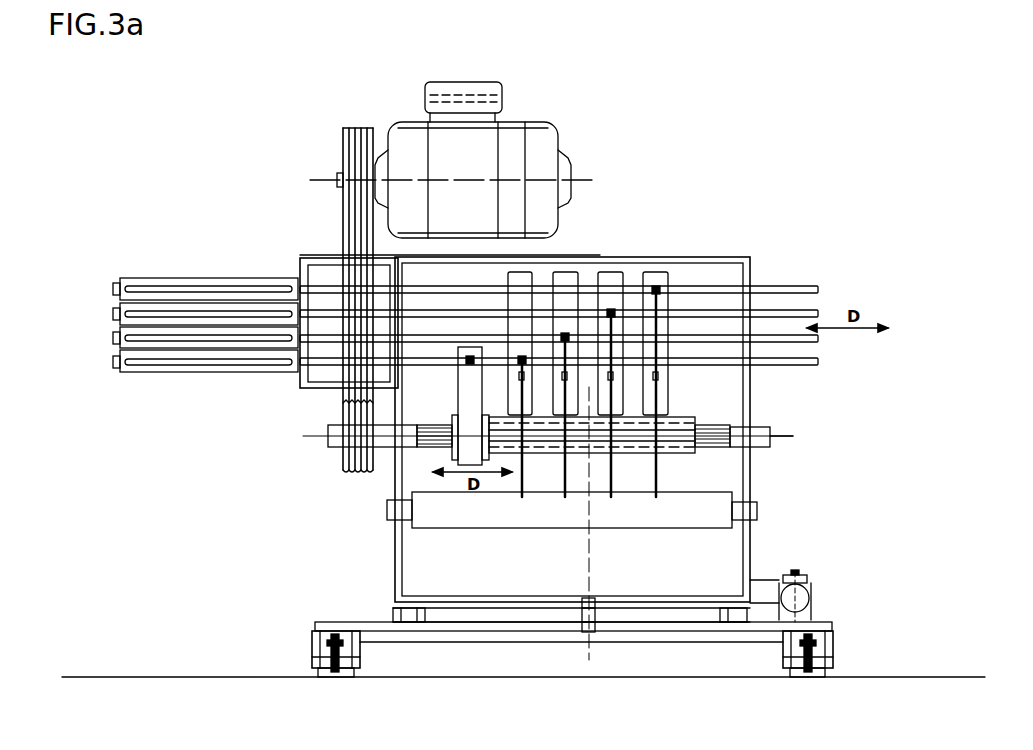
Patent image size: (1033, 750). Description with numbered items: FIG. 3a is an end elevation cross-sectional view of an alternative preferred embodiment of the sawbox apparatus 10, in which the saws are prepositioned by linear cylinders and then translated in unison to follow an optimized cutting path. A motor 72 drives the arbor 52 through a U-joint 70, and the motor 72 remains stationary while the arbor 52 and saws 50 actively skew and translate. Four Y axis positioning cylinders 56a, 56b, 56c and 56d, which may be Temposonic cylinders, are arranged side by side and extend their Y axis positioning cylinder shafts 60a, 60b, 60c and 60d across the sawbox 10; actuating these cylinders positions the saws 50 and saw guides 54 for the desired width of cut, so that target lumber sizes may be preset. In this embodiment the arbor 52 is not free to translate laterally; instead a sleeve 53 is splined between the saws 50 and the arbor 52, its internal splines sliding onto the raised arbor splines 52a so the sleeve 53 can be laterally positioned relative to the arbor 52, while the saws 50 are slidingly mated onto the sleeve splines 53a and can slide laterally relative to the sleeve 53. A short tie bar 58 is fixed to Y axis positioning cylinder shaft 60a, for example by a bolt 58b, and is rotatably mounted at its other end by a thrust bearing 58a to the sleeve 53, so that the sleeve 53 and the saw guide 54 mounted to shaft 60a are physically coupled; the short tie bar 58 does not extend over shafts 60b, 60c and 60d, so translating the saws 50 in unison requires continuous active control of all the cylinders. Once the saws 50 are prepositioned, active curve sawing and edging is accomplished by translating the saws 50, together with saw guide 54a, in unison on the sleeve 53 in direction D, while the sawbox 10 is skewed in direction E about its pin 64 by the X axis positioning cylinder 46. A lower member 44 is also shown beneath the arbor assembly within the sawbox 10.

The sawbox apparatus 10 is at (692, 62).
The motor 72 is at (542, 138).
The U-joint 70 is at (327, 440).
The Y axis positioning cylinder 56a is at (117, 360).
The Y axis positioning cylinder 56b is at (117, 333).
The Y axis positioning cylinder 56c is at (117, 307).
The Y axis positioning cylinder 56d is at (118, 283).
The Y axis positioning cylinder shaft 60a is at (818, 365).
The Y axis positioning cylinder shaft 60b is at (818, 342).
The Y axis positioning cylinder shaft 60c is at (815, 308).
The Y axis positioning cylinder shaft 60d is at (785, 285).
The saw guide 54 is at (522, 356).
The saw guide 54a is at (656, 272).
The saw 50 is at (521, 478).
The tie bar 58 is at (476, 465).
The thrust bearing 58a is at (455, 447).
The bolt 58b is at (462, 362).
The sleeve 53 is at (712, 425).
The sleeve splines 53a is at (683, 455).
The arbor 52 is at (765, 448).
The arbor splines 52a is at (715, 427).
The lower cylinder 44 is at (420, 525).
The pin 64 is at (589, 632).
The X axis positioning cylinder 46 is at (800, 578).